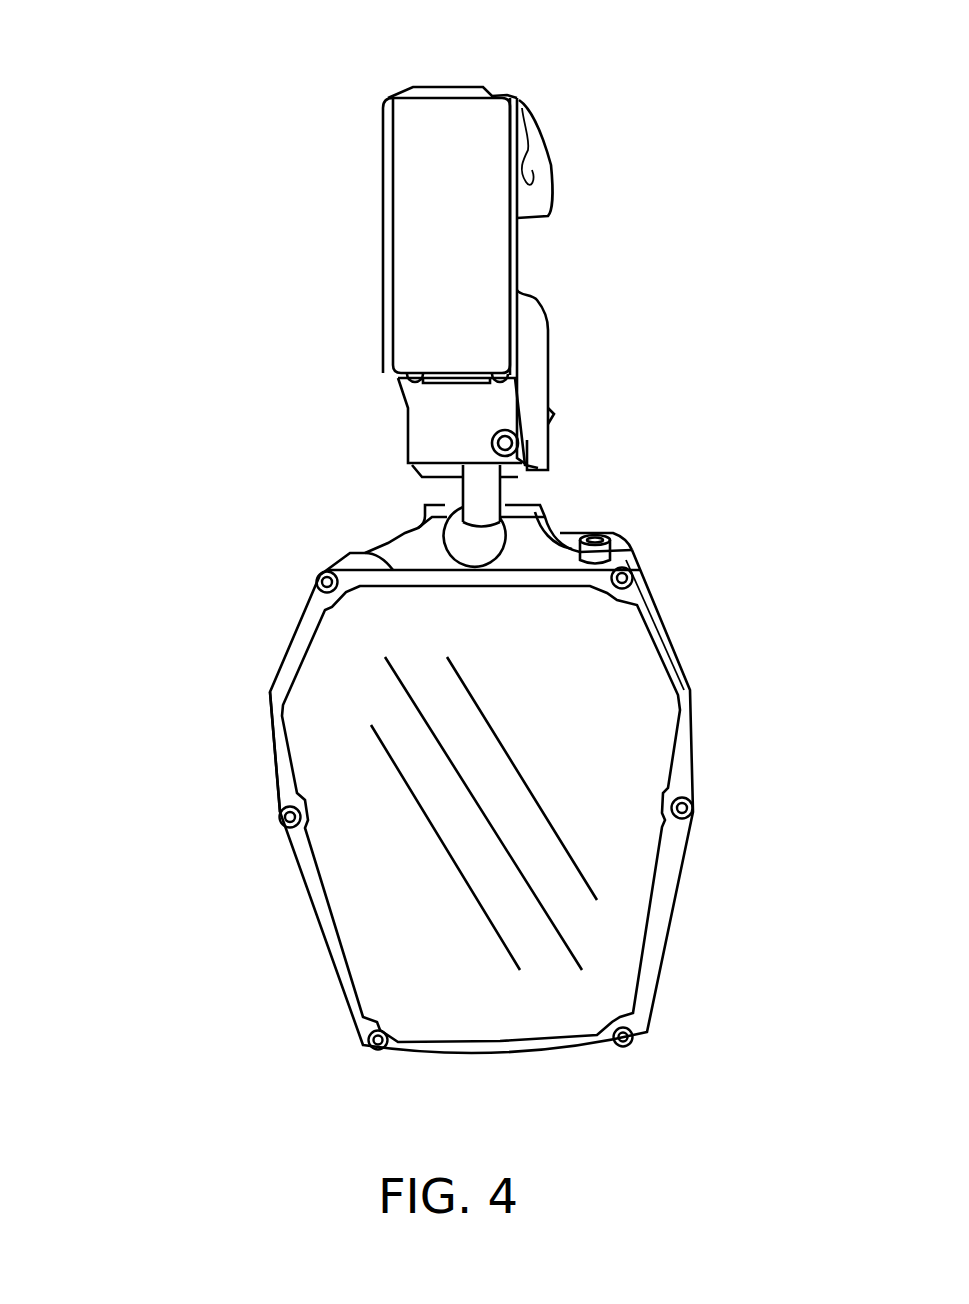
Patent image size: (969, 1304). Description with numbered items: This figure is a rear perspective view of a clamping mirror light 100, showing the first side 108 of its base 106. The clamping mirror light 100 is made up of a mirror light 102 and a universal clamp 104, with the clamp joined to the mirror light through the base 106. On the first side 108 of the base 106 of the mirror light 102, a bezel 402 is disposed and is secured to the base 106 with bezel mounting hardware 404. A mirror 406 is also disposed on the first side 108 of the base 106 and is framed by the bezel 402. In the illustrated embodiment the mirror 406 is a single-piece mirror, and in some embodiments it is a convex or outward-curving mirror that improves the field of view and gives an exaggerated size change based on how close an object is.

The clamping mirror light 100 is at (206, 58).
The mirror light 102 is at (663, 592).
The universal clamp 104 is at (550, 316).
The base 106 is at (365, 565).
The first side 108 is at (296, 656).
The bezel 402 is at (276, 757).
The bezel mounting hardware 404 is at (690, 814).
The mirror 406 is at (347, 882).